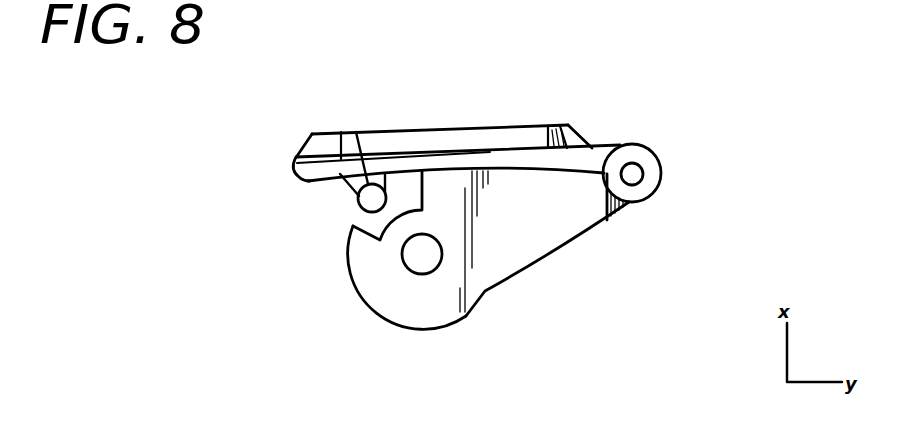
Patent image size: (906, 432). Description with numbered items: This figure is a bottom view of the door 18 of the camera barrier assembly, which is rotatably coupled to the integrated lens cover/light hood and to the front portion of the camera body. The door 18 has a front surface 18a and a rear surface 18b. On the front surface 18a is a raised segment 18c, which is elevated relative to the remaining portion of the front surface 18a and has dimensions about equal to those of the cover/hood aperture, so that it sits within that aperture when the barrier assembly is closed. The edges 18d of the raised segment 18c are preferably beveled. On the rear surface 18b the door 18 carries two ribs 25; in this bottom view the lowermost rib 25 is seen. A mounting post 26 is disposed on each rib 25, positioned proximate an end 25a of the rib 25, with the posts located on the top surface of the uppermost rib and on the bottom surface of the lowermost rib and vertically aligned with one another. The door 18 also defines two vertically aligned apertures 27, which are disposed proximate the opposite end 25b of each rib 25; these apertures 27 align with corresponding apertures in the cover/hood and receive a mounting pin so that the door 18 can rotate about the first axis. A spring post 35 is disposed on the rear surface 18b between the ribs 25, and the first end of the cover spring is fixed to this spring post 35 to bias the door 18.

The door 18 is at (295, 133).
The front surface 18a is at (609, 146).
The rear surface 18b is at (297, 186).
The raised segment 18c is at (392, 131).
The edges 18d is at (591, 144).
The apertures 27 is at (638, 171).
The spring post 35 is at (358, 196).
The mounting post 26 is at (430, 251).
The ribs 25 is at (578, 233).
The end of rib 25a is at (348, 258).
The end of rib 25b is at (631, 205).